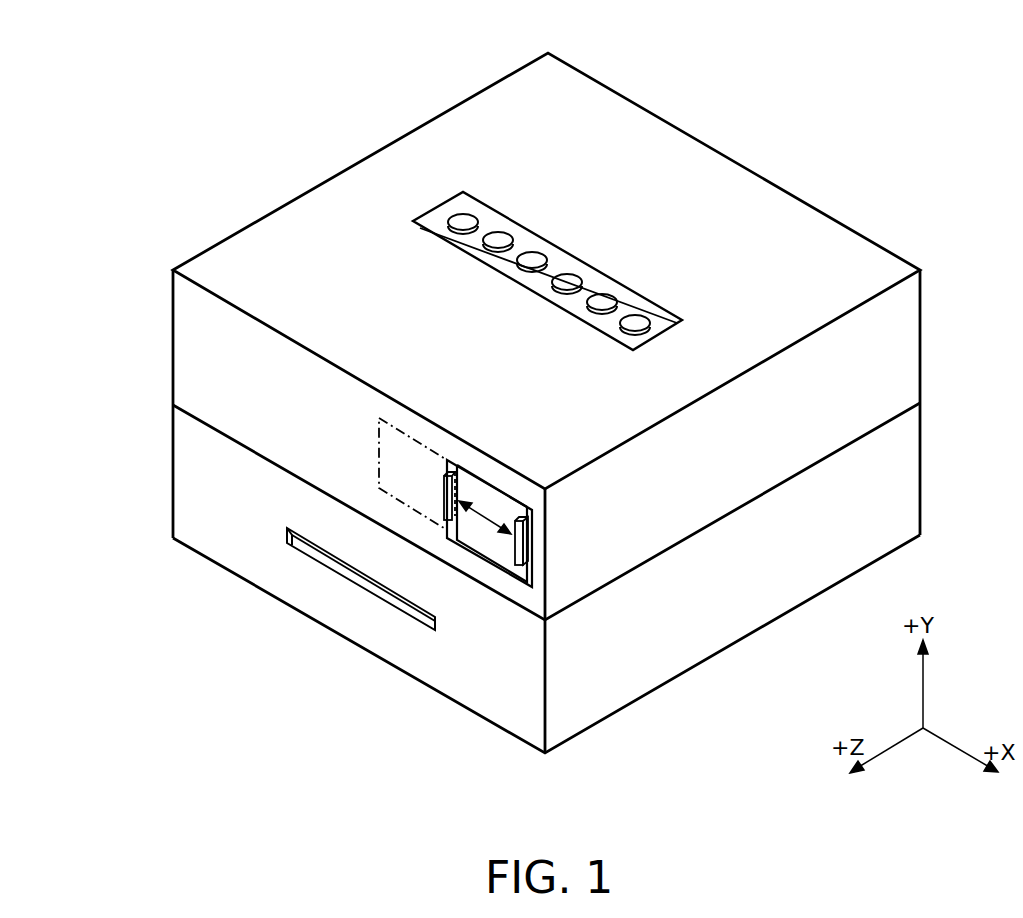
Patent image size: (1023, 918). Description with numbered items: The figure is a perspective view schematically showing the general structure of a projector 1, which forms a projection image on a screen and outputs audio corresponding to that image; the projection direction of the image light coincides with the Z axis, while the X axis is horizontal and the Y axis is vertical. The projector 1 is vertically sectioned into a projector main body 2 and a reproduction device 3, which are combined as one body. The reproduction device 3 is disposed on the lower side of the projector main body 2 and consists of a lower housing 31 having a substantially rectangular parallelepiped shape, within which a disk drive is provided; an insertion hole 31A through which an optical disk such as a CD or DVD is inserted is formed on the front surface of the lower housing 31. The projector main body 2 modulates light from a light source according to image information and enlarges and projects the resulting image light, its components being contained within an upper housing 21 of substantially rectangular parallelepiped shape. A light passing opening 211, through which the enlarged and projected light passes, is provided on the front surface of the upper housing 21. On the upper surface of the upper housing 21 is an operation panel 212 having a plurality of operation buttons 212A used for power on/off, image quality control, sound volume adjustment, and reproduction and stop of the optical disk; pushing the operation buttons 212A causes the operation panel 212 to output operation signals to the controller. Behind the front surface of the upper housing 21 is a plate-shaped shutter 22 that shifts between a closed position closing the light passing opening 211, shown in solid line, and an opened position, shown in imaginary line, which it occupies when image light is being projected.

The projector 1 is at (212, 173).
The projector main body 2 is at (224, 258).
The reproduction device 3 is at (192, 452).
The upper housing 21 is at (840, 232).
The shutter 22 is at (488, 487).
The light passing opening 211 is at (496, 549).
The operation panel 212 is at (595, 281).
The operation buttons 212A is at (565, 280).
The lower housing 31 is at (472, 700).
The insertion hole 31A is at (342, 577).